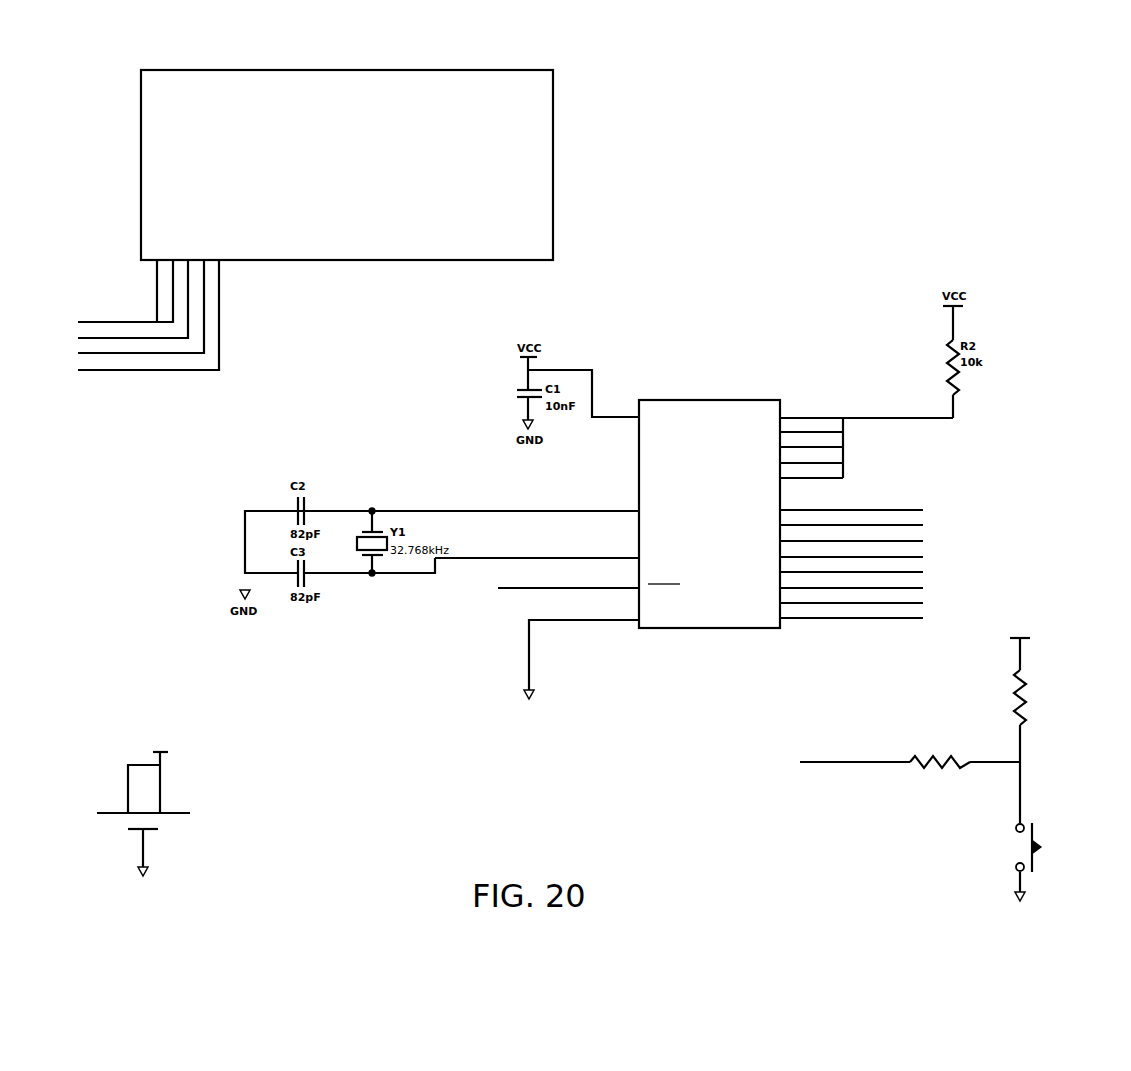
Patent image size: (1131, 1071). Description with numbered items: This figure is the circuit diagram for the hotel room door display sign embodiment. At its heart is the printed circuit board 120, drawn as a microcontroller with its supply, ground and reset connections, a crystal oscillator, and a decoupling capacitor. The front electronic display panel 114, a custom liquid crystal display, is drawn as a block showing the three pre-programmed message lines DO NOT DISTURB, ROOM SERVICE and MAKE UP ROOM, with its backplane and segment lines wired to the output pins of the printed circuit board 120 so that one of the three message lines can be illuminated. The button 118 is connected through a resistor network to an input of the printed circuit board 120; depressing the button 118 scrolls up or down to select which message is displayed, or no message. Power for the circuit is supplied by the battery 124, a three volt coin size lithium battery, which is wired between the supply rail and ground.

The front electronic display panel 114 is at (157, 163).
The printed circuit board 120 is at (698, 402).
The button 118 is at (1063, 815).
The battery 124 is at (172, 790).